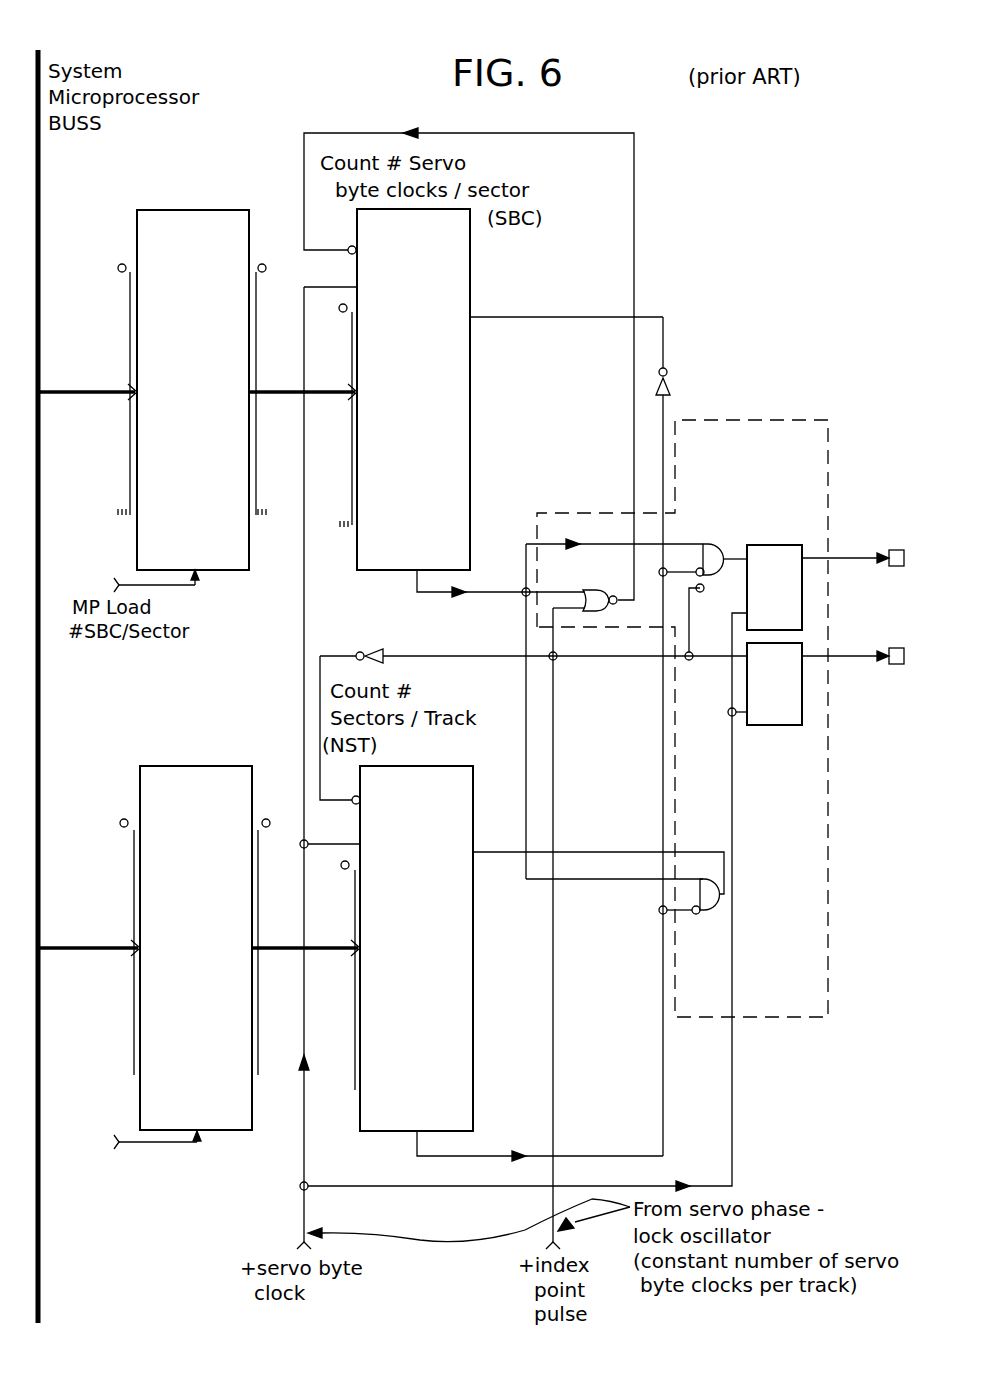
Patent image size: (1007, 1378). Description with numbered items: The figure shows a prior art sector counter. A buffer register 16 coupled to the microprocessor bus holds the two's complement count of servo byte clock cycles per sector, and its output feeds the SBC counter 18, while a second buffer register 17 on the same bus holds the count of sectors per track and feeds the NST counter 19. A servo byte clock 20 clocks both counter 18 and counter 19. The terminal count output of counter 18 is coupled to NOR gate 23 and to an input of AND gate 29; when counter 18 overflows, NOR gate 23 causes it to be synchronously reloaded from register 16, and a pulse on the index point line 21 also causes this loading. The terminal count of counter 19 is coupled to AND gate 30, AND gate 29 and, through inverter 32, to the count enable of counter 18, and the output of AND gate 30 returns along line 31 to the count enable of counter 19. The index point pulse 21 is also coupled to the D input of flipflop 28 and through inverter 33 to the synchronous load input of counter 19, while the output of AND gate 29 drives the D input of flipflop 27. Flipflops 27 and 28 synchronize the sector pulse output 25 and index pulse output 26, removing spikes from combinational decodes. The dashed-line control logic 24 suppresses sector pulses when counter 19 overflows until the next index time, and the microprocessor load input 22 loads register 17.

The buffer register 16 is at (204, 210).
The buffer register 17 is at (208, 766).
The SBC counter 18 is at (470, 472).
The NST counter 19 is at (473, 1029).
The servo byte clock 20 is at (303, 302).
The index point line 21 is at (412, 658).
The MP load sector pulses/track input 22 is at (200, 1137).
The NOR gate 23 is at (603, 590).
The control logic 24 is at (828, 455).
The sector pulse output 25 is at (823, 562).
The index pulse output 26 is at (856, 662).
The flipflop 27 is at (762, 545).
The flipflop 28 is at (780, 728).
The AND gate 29 is at (716, 544).
The AND gate 30 is at (708, 914).
The count enable line 31 is at (596, 851).
The inverter 32 is at (668, 380).
The inverter 33 is at (370, 654).